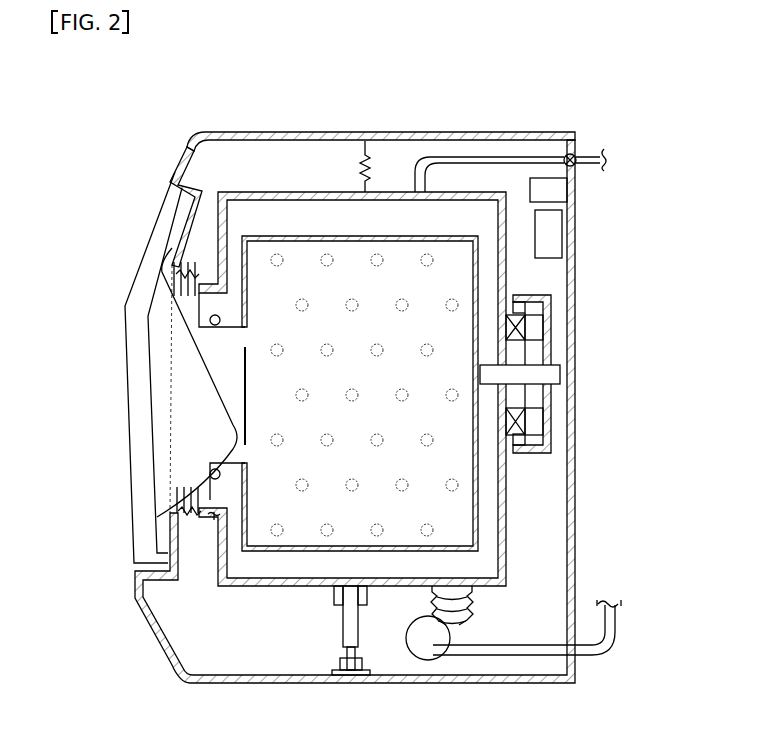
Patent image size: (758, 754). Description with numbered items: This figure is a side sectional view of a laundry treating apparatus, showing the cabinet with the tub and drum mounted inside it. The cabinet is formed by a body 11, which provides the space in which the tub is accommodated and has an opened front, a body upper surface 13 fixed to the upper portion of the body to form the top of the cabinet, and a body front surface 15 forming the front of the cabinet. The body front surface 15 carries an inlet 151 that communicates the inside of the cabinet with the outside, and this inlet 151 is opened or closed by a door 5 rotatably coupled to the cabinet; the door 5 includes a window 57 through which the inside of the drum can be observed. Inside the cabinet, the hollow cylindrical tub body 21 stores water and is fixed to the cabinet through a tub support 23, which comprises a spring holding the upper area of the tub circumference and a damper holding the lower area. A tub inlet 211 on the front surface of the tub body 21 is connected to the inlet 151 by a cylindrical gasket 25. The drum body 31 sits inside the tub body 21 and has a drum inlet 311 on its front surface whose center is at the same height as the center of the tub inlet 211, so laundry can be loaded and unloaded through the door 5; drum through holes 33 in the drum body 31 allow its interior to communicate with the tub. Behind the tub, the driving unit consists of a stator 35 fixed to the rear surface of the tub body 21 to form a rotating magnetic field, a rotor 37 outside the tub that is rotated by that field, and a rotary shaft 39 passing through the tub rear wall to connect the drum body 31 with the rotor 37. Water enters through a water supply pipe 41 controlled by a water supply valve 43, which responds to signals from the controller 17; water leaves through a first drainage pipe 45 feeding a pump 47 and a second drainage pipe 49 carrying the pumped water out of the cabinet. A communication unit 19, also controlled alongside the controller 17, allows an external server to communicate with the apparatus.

The door 5 is at (147, 250).
The body 11 is at (573, 512).
The body upper surface 13 is at (201, 132).
The body front surface 15 is at (181, 155).
The inlet 151 is at (172, 498).
The controller 17 is at (558, 235).
The communication unit 19 is at (558, 190).
The tub body 21 is at (318, 192).
The tub inlet 211 is at (213, 517).
The tub support 23 is at (367, 160).
The gasket 25 is at (183, 298).
The drum body 31 is at (278, 236).
The drum inlet 311 is at (220, 340).
The drum through hole 33 is at (277, 528).
The stator 35 is at (522, 327).
The rotor 37 is at (549, 420).
The rotary shaft 39 is at (557, 374).
The water supply pipe 41 is at (520, 157).
The water supply valve 43 is at (577, 157).
The first drainage pipe 45 is at (452, 604).
The pump 47 is at (450, 635).
The second drainage pipe 49 is at (612, 628).
The window 57 is at (178, 412).